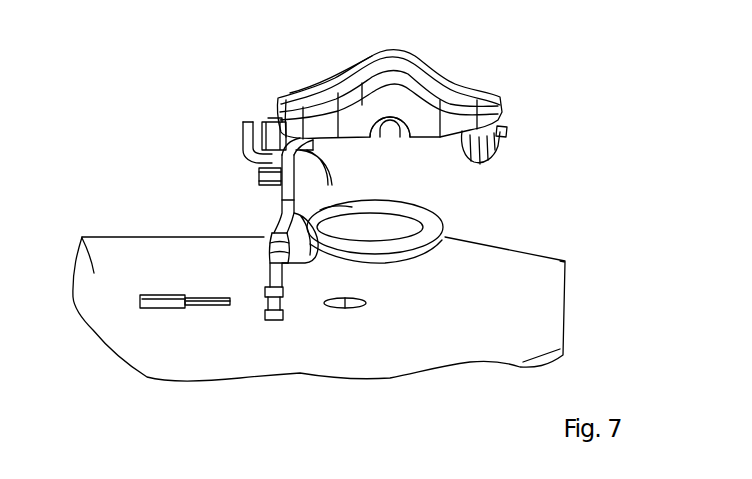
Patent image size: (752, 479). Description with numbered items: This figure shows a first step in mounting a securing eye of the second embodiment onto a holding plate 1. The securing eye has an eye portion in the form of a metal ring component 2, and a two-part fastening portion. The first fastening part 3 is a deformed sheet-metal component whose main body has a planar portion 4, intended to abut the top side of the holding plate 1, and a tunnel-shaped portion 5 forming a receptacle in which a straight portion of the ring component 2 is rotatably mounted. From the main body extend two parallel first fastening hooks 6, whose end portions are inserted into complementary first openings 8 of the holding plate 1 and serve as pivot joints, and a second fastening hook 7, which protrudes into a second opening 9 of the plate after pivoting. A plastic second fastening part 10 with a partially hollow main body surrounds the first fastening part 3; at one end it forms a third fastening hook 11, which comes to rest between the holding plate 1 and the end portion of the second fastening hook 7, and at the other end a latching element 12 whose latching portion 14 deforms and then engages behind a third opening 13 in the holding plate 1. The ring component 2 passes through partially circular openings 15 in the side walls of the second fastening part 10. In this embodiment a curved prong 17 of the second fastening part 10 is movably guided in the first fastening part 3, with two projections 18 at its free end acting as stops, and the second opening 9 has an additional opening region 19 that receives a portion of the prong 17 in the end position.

The holding plate 1 is at (82, 238).
The ring component 2 is at (414, 213).
The first fastening part 3 is at (281, 198).
The planar portion 4 is at (313, 186).
The tunnel-shaped portion 5 is at (326, 213).
The first fastening hooks 6 is at (260, 272).
The second fastening hook 7 is at (239, 142).
The first openings 8 is at (266, 302).
The second opening 9 is at (156, 310).
The second fastening part 10 is at (492, 86).
The third fastening hook 11 is at (268, 127).
The latching element 12 is at (474, 147).
The third opening 13 is at (341, 311).
The latching portion 14 is at (510, 135).
The partially circular openings 15 is at (392, 116).
The prong 17 is at (303, 140).
The projections 18 is at (258, 177).
The additional opening region 19 is at (189, 309).